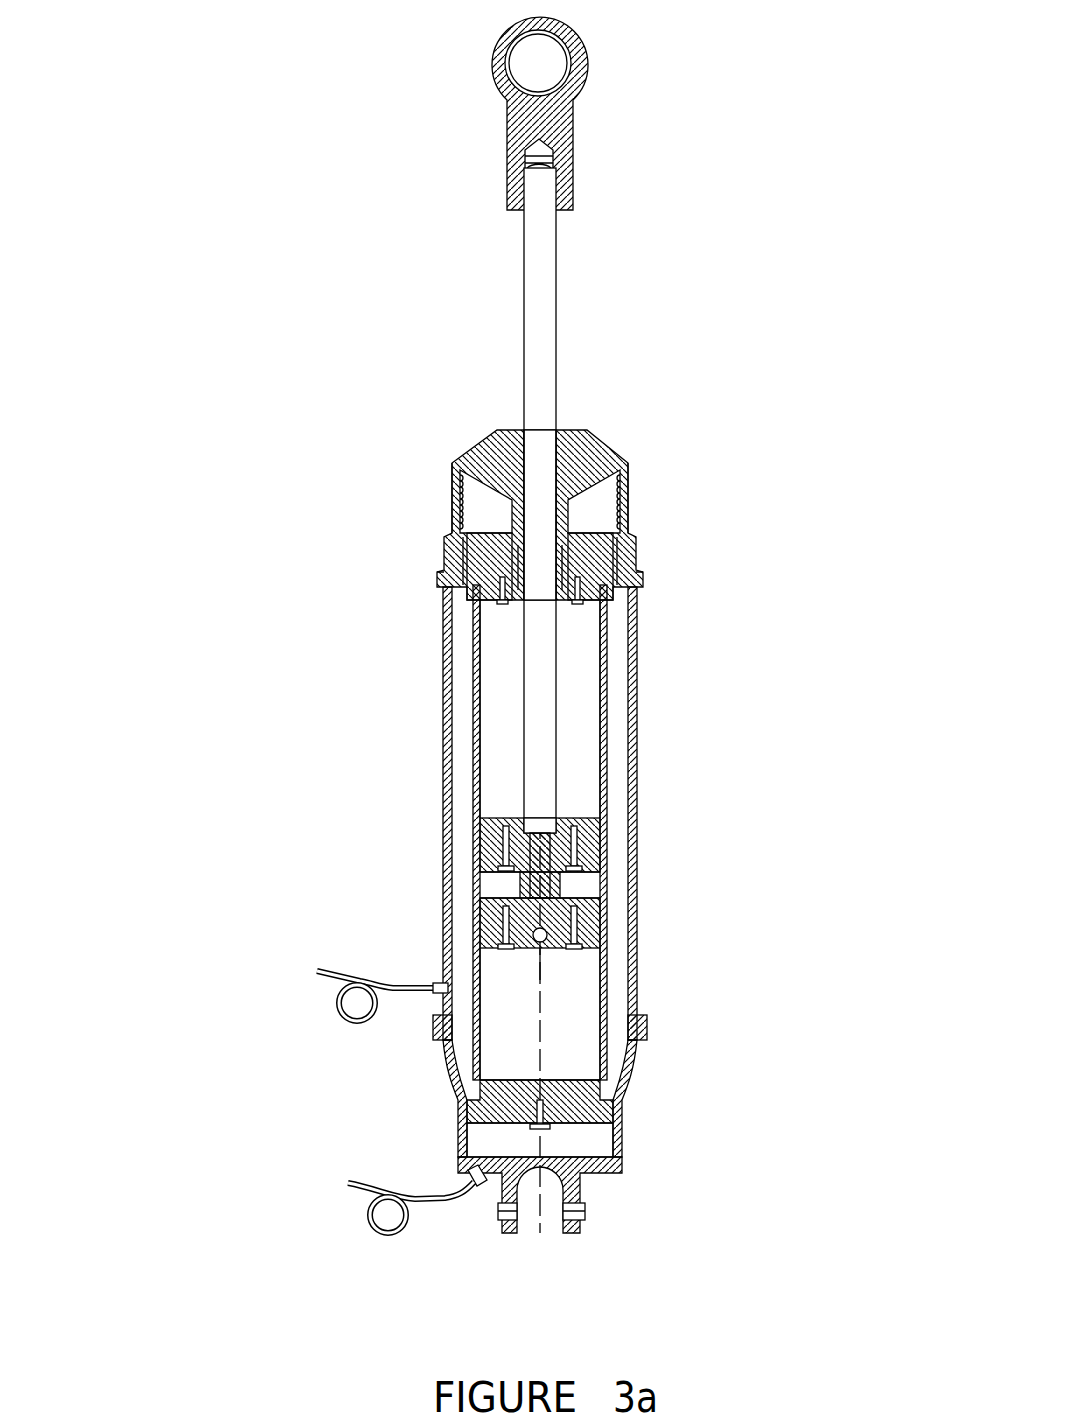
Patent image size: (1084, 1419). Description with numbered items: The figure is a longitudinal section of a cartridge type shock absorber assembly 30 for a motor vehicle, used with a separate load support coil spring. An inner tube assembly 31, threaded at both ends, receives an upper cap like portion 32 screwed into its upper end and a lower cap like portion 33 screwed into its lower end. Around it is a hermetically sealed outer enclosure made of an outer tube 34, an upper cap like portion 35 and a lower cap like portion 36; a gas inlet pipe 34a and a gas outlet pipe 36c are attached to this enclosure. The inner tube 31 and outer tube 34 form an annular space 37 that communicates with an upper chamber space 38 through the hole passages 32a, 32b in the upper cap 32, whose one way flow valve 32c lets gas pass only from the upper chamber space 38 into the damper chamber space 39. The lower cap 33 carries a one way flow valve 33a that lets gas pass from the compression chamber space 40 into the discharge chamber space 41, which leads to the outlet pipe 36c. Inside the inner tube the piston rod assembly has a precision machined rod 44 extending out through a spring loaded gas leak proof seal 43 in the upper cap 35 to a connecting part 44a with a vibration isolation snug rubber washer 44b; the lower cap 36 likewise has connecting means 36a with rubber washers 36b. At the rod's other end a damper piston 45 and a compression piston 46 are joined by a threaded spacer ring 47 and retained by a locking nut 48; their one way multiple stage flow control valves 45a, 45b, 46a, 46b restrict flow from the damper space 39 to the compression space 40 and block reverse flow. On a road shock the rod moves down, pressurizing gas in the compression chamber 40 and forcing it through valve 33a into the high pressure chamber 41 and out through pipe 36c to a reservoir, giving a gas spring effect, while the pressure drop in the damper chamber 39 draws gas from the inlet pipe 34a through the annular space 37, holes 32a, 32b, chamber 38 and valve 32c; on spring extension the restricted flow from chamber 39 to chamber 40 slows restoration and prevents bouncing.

The shock absorber assembly 30 is at (315, 1198).
The inner tube assembly 31 is at (637, 695).
The upper cap like portion 32 is at (638, 555).
The hole passage 32a is at (628, 522).
The hole passage 32b is at (452, 520).
The one way flow valve 32c is at (446, 548).
The lower cap like portion 33 is at (617, 1108).
The one way flow valve 33a is at (530, 1110).
The outer tube 34 is at (637, 628).
The gas inlet pipe 34a is at (437, 988).
The upper cap like portion 35 is at (628, 487).
The lower cap like portion 36 is at (625, 1170).
The connecting means 36a is at (585, 1232).
The vibration isolation snug rubber washer 36b is at (488, 1202).
The gas outlet pipe 36c is at (485, 1147).
The annular space 37 is at (465, 795).
The upper chamber space 38 is at (490, 507).
The damper chamber space 39 is at (495, 712).
The compression chamber space 40 is at (493, 965).
The discharge chamber space 41 is at (462, 1128).
The gas leak proof seal 43 is at (603, 442).
The rod 44 is at (548, 322).
The connecting part 44a is at (568, 168).
The vibration isolation snug rubber washer 44b is at (572, 42).
The damper piston 45 is at (565, 822).
The one way multiple stage flow control valve 45a is at (604, 840).
The one way multiple stage flow control valve 45b is at (651, 834).
The compression piston 46 is at (603, 886).
The one way multiple stage flow control valve 46a is at (603, 912).
The one way multiple stage flow control valve 46b is at (651, 917).
The threaded spacer ring 47 is at (487, 857).
The locking nut 48 is at (552, 955).